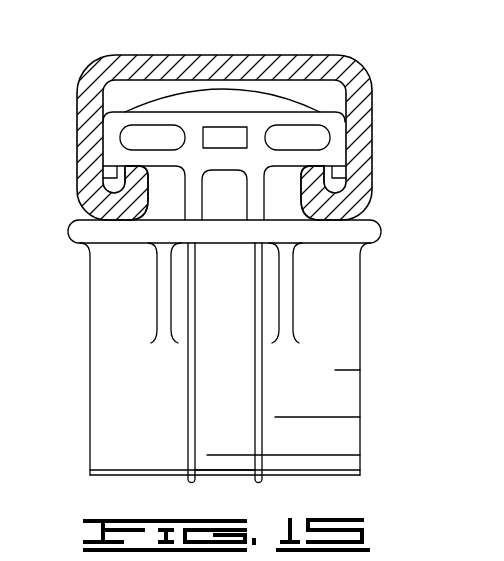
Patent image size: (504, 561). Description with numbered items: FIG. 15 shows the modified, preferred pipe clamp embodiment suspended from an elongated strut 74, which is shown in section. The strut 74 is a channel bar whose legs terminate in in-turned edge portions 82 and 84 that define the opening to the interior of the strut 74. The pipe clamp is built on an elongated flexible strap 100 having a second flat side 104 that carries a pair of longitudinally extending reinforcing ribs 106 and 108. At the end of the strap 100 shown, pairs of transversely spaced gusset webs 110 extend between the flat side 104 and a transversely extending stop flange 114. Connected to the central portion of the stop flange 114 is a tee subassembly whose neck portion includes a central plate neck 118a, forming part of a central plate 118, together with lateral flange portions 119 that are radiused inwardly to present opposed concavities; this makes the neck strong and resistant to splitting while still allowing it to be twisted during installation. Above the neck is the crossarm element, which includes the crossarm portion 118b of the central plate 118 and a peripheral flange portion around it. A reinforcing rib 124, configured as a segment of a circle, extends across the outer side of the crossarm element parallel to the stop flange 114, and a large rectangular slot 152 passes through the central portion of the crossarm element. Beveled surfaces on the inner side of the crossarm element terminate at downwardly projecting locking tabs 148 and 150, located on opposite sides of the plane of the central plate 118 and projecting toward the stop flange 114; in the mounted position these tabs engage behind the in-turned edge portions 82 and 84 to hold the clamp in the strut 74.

The strut 74 is at (75, 63).
The rectangular slot 152 is at (219, 137).
The reinforcing rib 124 is at (285, 106).
The central plate 118 is at (320, 137).
The crossarm portion 118b is at (132, 137).
The central plate neck 118a is at (218, 212).
The locking tab 148 is at (110, 170).
The locking tab 150 is at (343, 177).
The in-turned edge portion 82 is at (138, 184).
The in-turned edge portion 84 is at (308, 190).
The lateral flange portion 119 is at (190, 194).
The stop flange 114 is at (372, 233).
The flexible strap 100 is at (372, 409).
The gusset web 110 is at (160, 317).
The reinforcing rib 106 is at (188, 400).
The reinforcing rib 108 is at (258, 398).
The second flat side 104 is at (237, 431).